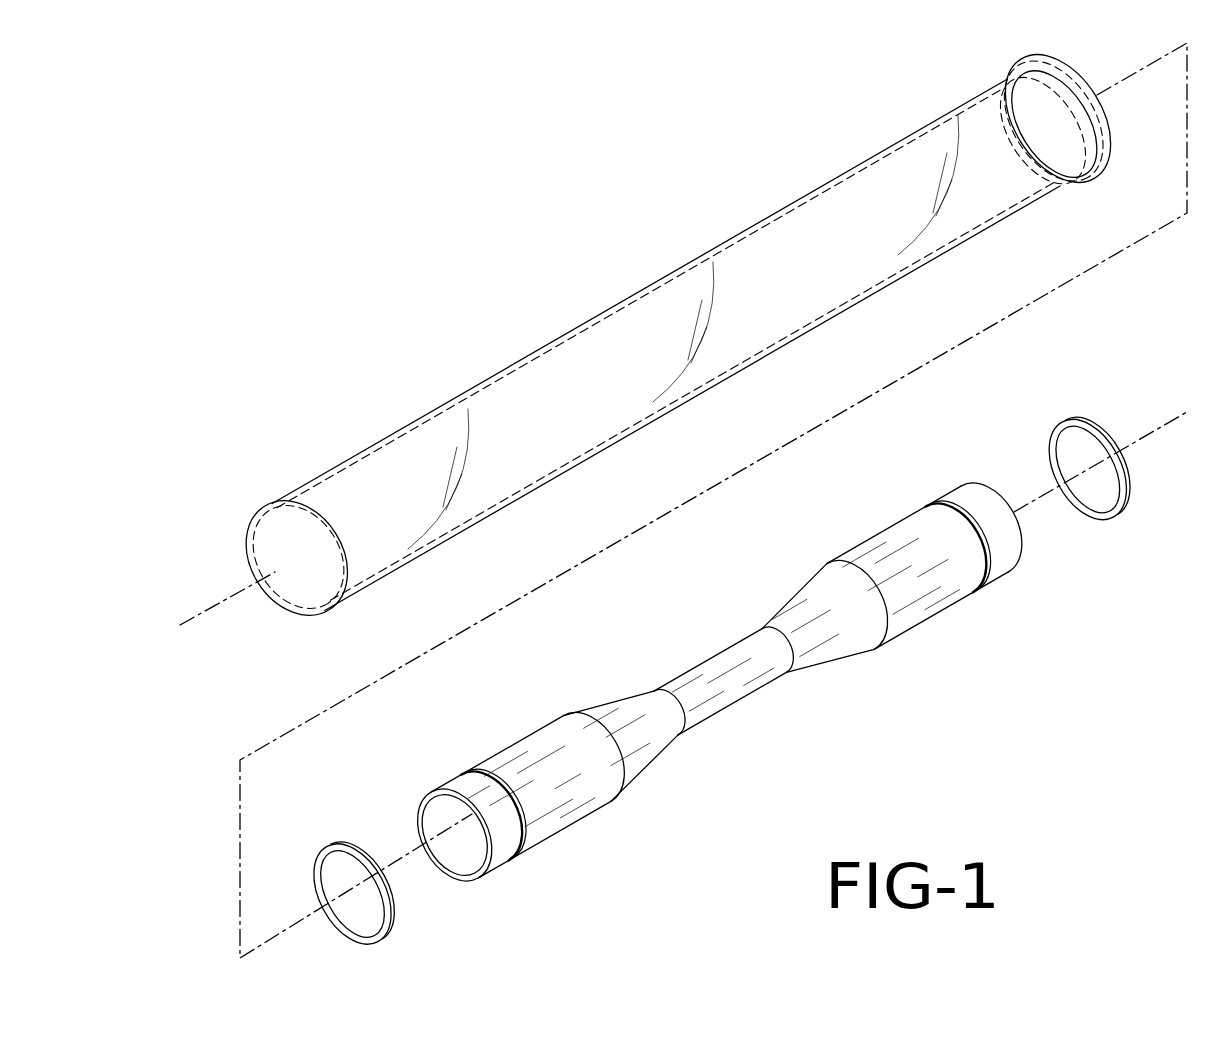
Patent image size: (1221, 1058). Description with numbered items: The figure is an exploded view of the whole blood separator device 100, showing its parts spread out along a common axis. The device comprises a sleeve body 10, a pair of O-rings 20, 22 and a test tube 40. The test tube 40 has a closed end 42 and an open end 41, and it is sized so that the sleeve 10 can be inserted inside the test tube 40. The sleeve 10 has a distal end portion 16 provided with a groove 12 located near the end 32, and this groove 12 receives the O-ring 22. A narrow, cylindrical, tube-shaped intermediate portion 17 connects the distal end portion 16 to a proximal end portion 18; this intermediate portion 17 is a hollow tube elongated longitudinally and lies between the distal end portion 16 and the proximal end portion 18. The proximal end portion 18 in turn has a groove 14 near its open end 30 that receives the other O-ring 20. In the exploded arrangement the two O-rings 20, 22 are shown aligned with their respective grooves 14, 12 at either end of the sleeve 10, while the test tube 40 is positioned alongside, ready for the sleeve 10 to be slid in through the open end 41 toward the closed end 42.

The whole blood separator device 100 is at (683, 497).
The sleeve body 10 is at (699, 669).
The groove 12 is at (520, 829).
The groove 14 is at (990, 553).
The distal end portion 16 is at (511, 745).
The intermediate portion 17 is at (710, 657).
The proximal end portion 18 is at (884, 523).
The O-ring 20 is at (1097, 437).
The O-ring 22 is at (310, 865).
The open end 30 is at (993, 489).
The end 32 is at (450, 826).
The test tube 40 is at (645, 283).
The open end 41 is at (1105, 118).
The closed end 42 is at (280, 552).